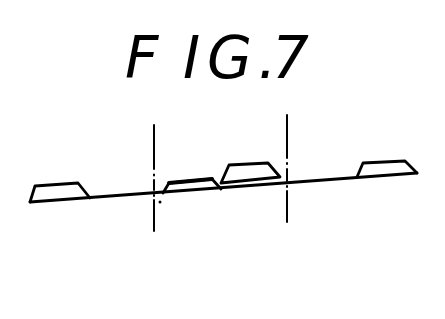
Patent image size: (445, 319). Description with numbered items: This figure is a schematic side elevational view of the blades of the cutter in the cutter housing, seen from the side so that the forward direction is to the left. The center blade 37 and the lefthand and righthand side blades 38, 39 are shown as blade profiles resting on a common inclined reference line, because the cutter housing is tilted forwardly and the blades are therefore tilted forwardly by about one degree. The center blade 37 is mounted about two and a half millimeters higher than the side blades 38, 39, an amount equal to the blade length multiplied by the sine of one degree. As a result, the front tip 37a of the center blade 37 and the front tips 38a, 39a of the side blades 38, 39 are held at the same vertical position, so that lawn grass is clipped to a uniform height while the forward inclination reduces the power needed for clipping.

The center blade 37 is at (130, 194).
The front tip of the center blade 37a is at (31, 204).
The lefthand side blade 38 is at (371, 210).
The righthand side blade 39 is at (387, 169).
The front tip of the lefthand side blade 38a is at (240, 231).
The front tip of the righthand side blade 39a is at (250, 173).